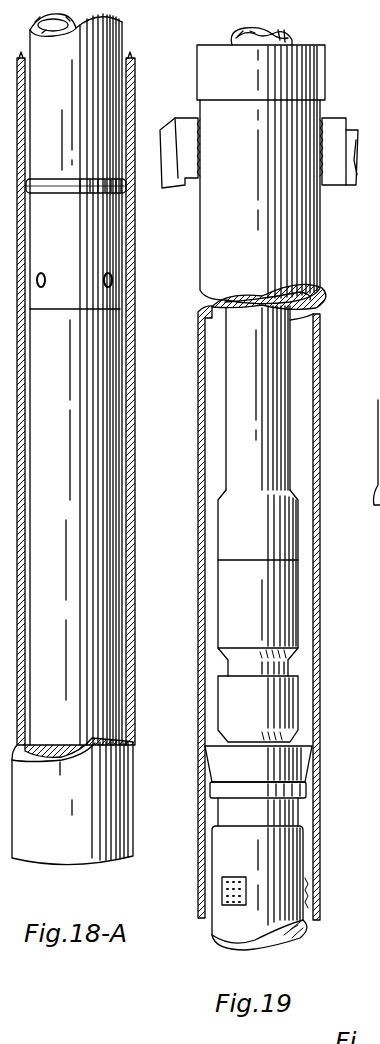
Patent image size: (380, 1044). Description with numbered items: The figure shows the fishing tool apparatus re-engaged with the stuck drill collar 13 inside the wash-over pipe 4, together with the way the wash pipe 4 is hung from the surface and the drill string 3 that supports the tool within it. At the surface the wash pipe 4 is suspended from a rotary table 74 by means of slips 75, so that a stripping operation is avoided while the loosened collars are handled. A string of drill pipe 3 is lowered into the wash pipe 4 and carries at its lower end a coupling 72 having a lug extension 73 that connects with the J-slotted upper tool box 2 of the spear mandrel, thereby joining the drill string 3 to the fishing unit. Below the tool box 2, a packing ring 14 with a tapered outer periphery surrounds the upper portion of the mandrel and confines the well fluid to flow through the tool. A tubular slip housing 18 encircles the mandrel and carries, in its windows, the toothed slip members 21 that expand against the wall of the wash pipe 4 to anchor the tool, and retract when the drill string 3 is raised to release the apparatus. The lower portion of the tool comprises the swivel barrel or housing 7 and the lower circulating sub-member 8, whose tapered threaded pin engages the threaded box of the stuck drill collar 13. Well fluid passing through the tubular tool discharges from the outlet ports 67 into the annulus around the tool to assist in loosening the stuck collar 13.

In FIG. 19, the upper tool box 2 is at (298, 705).
In FIG. 19, the drill string 3 is at (290, 40).
In FIG. 18A, the wash-over pipe 4 is at (135, 452).
In FIG. 19, the wash-over pipe 4 is at (318, 220).
In FIG. 18A, the swivel barrel or housing 7 is at (122, 38).
In FIG. 18A, the lower circulating sub-member 8 is at (113, 229).
In FIG. 18A, the stuck drill collar 13 is at (112, 391).
In FIG. 19, the packing ring 14 is at (312, 770).
In FIG. 19, the slip housing or tubular cage member 18 is at (295, 845).
In FIG. 19, the slip member 21 is at (308, 895).
In FIG. 18A, the outlet ports 67 is at (113, 279).
In FIG. 19, the coupling 72 is at (288, 590).
In FIG. 19, the lug extension 73 is at (290, 662).
In FIG. 19, the rotary table 74 is at (168, 135).
In FIG. 19, the slips 75 is at (338, 125).